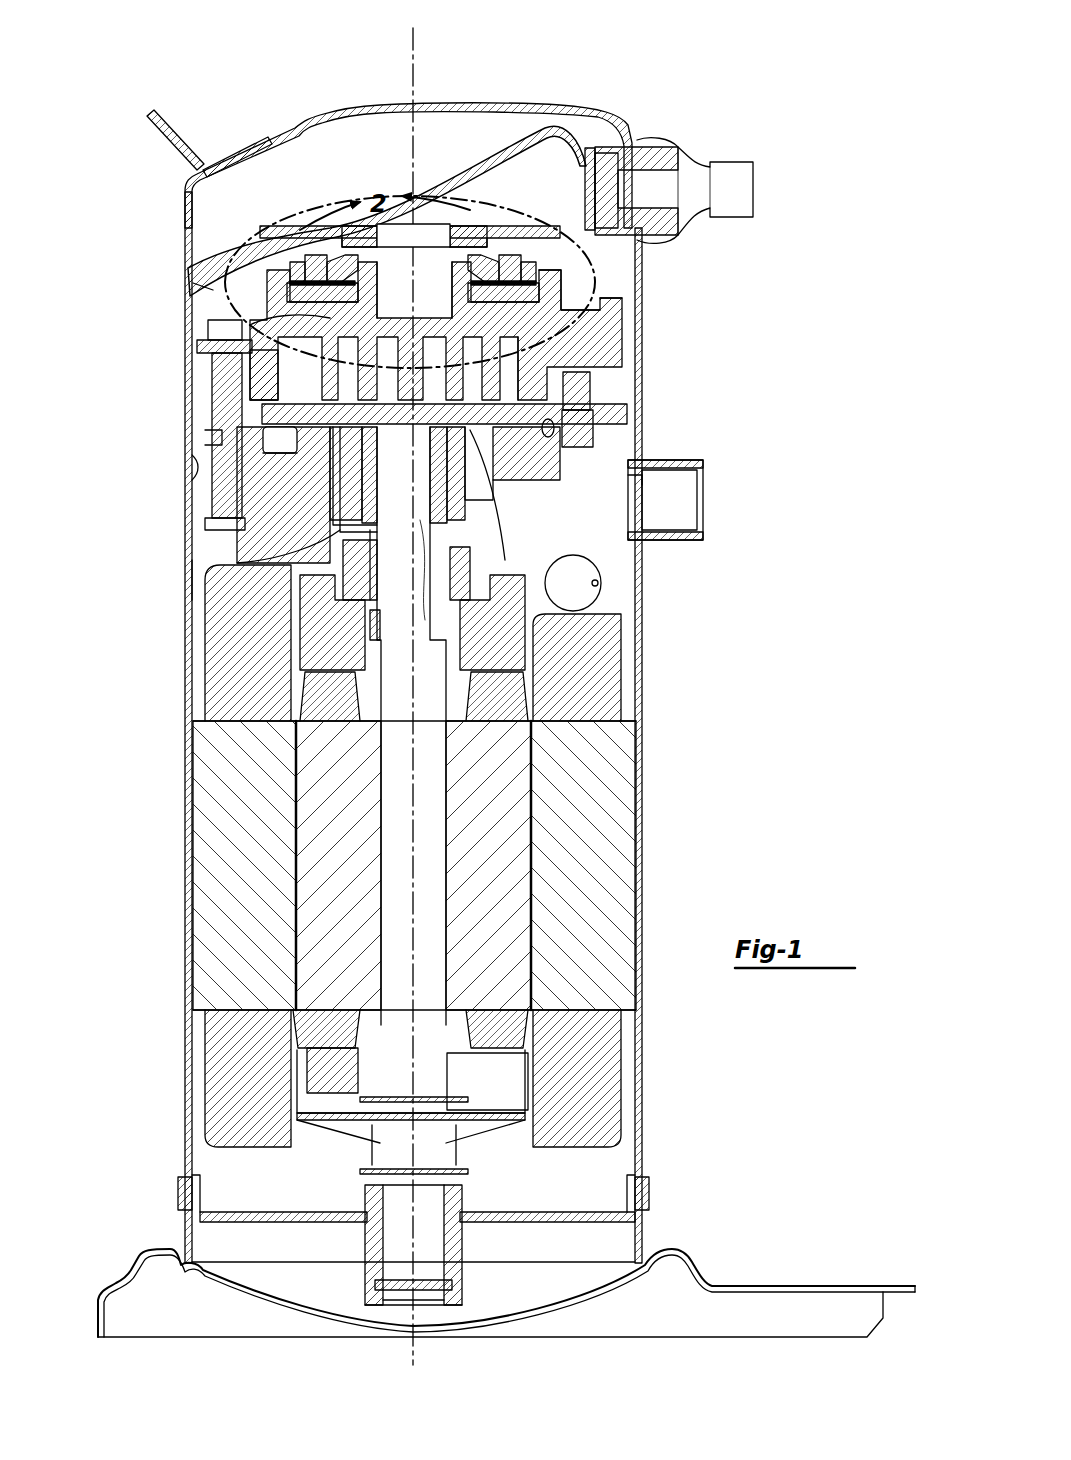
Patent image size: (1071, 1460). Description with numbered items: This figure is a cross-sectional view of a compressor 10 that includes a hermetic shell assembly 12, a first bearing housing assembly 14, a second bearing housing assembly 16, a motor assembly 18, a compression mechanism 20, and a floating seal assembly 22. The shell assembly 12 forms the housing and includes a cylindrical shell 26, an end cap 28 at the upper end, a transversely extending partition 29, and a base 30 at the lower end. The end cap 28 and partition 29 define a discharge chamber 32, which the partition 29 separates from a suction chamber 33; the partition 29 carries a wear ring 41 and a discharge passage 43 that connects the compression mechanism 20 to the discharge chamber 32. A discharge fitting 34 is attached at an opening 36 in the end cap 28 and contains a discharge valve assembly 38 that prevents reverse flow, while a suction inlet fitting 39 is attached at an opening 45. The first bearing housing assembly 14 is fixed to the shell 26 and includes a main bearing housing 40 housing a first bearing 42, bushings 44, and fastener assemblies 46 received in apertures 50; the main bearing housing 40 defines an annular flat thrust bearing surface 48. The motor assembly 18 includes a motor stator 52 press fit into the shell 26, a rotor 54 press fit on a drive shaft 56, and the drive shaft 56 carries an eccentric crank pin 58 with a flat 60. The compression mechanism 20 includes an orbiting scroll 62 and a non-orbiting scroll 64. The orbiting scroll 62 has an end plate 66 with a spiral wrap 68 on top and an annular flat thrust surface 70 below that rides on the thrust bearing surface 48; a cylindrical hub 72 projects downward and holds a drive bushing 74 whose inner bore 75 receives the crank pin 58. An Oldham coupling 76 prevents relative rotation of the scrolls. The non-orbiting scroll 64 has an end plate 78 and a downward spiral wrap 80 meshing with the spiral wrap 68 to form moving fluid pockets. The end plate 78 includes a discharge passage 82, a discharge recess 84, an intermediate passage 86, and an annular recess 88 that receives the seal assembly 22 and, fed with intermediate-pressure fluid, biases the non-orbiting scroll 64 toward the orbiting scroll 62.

The compressor 10 is at (752, 72).
The hermetic shell assembly 12 is at (647, 371).
The first bearing housing assembly 14 is at (187, 463).
The second bearing housing assembly 16 is at (357, 1240).
The motor assembly 18 is at (218, 912).
The compression mechanism 20 is at (607, 322).
The floating seal assembly 22 is at (304, 248).
The cylindrical shell 26 is at (190, 760).
The end cap 28 is at (362, 110).
The partition 29 is at (213, 290).
The base 30 is at (258, 1305).
The discharge chamber 32 is at (205, 196).
The suction chamber 33 is at (200, 565).
The discharge fitting 34 is at (682, 142).
The opening 36 is at (653, 148).
The discharge valve assembly 38 is at (590, 168).
The suction inlet fitting 39 is at (688, 542).
The main bearing housing 40 is at (523, 463).
The wear ring 41 is at (478, 240).
The first bearing 42 is at (378, 628).
The discharge passage 43 is at (446, 236).
The sleeve guides or bushings 44 is at (205, 410).
The opening 45 is at (640, 487).
The fastener assemblies 46 is at (210, 330).
The annular flat thrust bearing surface 48 is at (552, 432).
The apertures 50 is at (222, 436).
The motor stator 52 is at (590, 865).
The rotor 54 is at (494, 810).
The drive shaft 56 is at (400, 815).
The eccentric crank pin 58 is at (410, 466).
The flat 60 is at (440, 487).
The orbiting scroll 62 is at (297, 434).
The non-orbiting scroll 64 is at (563, 294).
The end plate 66 is at (527, 404).
The spiral wrap 68 is at (493, 393).
The annular flat thrust surface 70 is at (470, 432).
The cylindrical hub 72 is at (350, 508).
The drive bushing 74 is at (370, 508).
The inner bore 75 is at (420, 520).
The Oldham coupling 76 is at (597, 437).
The end plate 78 is at (600, 302).
The spiral wrap 80 is at (323, 377).
The discharge passage 82 is at (430, 320).
The discharge recess 84 is at (375, 300).
The intermediate passage 86 is at (330, 318).
The annular recess 88 is at (515, 273).